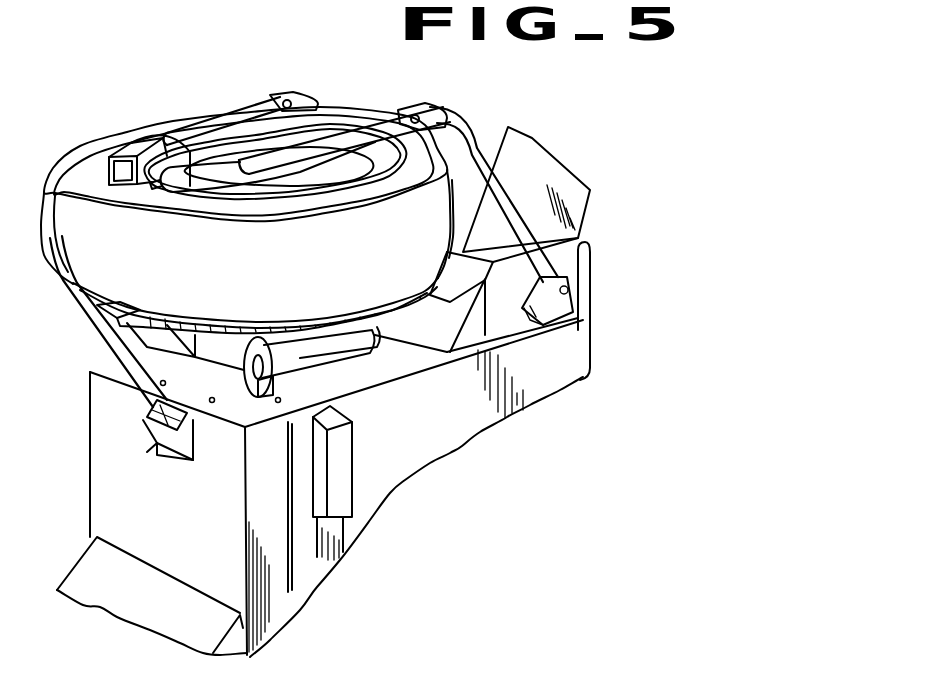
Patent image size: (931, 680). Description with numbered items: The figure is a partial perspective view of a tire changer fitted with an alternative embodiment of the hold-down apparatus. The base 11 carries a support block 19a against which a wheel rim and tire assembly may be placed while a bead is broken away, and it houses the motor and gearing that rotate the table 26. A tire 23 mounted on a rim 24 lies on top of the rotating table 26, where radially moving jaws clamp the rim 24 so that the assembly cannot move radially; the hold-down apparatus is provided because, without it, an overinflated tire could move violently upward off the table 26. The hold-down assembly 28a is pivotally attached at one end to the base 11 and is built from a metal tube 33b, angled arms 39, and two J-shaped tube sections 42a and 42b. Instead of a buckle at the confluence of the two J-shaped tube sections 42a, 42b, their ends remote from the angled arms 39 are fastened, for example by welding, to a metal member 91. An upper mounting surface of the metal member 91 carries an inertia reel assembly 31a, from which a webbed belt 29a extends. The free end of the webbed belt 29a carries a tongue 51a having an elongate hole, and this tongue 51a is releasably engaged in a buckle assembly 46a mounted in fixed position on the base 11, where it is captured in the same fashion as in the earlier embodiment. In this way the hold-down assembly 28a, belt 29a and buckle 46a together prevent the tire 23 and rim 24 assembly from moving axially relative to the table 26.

The base 11 is at (570, 363).
The support block 19a is at (347, 492).
The tire 23 is at (378, 268).
The rim 24 is at (313, 140).
The rotating table 26 is at (120, 313).
The hold-down assembly 28a is at (455, 101).
The webbed belt 29a is at (72, 270).
The inertia reel assembly 31a is at (150, 137).
The metal tube 33b is at (488, 167).
The angled arms 39 is at (305, 90).
The J shaped tube section 42a is at (248, 103).
The J shaped tube section 42b is at (248, 175).
The buckle assembly 46a is at (153, 437).
The tongue 51a is at (147, 413).
The metal member 91 is at (155, 186).